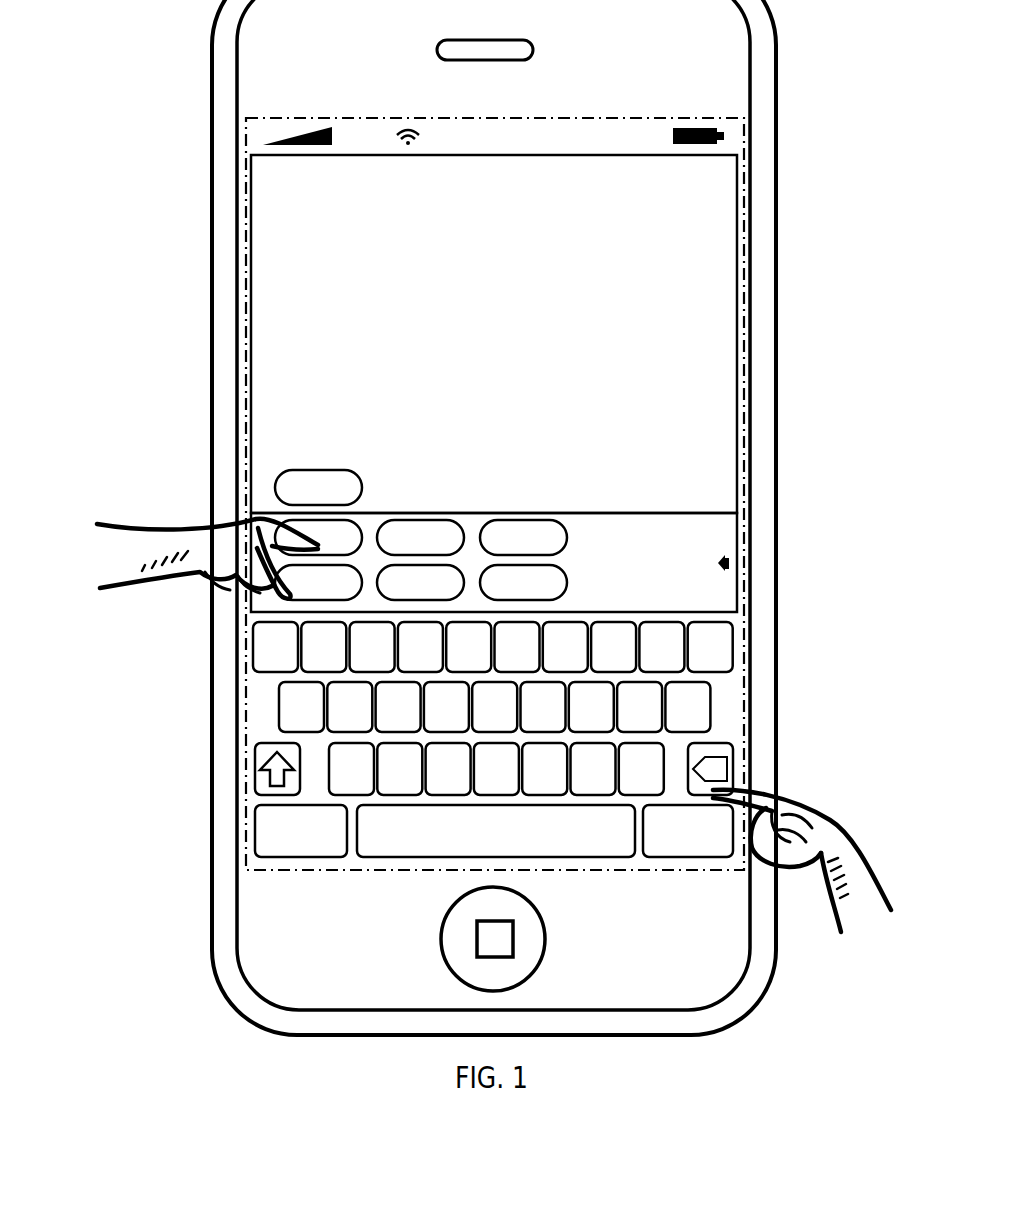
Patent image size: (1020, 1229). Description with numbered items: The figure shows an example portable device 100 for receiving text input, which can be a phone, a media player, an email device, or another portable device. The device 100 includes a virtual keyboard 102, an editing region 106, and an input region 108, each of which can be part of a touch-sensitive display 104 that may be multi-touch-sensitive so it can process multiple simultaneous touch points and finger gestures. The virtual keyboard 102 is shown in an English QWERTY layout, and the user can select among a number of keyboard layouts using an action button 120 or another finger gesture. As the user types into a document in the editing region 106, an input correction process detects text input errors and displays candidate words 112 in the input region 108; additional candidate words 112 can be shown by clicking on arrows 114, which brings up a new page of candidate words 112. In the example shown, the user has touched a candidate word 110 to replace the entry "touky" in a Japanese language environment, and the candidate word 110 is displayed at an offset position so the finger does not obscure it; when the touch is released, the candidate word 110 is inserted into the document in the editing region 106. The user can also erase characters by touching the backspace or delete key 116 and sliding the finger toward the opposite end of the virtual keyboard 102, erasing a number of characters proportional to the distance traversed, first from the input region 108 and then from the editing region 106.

The portable device 100 is at (766, 85).
The virtual keyboard 102 is at (474, 739).
The touch-sensitive display 104 is at (743, 137).
The editing region 106 is at (693, 342).
The input region 108 is at (723, 598).
The candidate word 110 is at (318, 470).
The candidate words 112 is at (567, 545).
The arrows 114 is at (730, 563).
The backspace or delete key 116 is at (733, 770).
The action button 120 is at (255, 829).